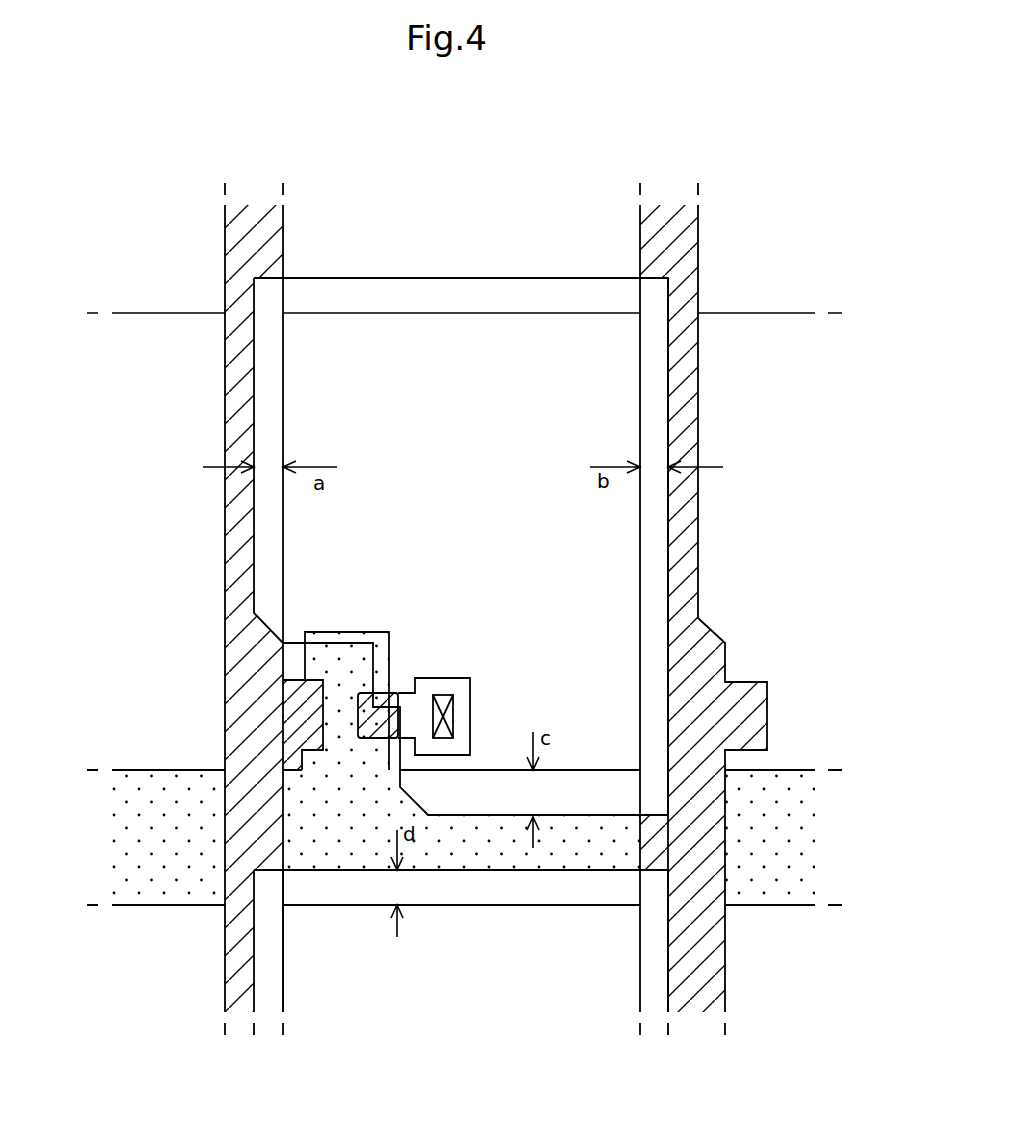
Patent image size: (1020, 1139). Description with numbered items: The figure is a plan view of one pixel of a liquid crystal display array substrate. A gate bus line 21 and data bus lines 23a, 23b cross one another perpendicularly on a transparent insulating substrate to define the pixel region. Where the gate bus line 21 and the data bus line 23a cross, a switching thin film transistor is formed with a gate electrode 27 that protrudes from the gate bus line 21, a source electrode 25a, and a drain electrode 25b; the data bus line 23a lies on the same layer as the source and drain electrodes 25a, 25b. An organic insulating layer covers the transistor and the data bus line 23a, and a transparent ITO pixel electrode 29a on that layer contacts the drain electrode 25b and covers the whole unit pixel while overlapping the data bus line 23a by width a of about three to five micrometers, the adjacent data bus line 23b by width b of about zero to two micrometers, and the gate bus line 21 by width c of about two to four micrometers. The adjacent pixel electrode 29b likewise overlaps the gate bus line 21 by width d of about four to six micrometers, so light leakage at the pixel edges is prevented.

The gate bus line 21 is at (160, 875).
The data bus line 23a is at (250, 258).
The adjacent data bus line 23b is at (672, 265).
The source electrode 25a is at (303, 732).
The drain electrode 25b is at (368, 717).
The gate electrode 27 is at (327, 657).
The pixel electrode 29a is at (608, 528).
The adjacent pixel electrode 29b is at (602, 998).